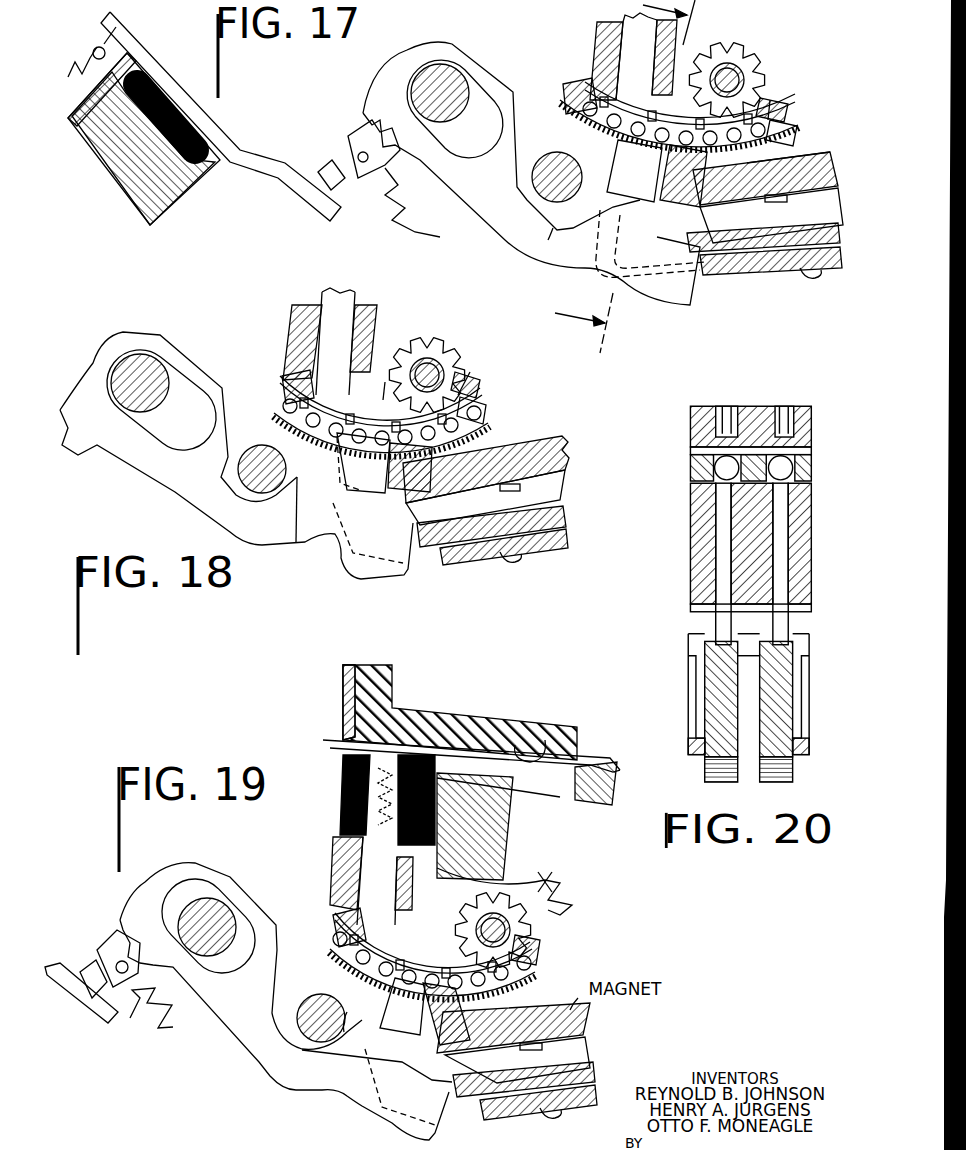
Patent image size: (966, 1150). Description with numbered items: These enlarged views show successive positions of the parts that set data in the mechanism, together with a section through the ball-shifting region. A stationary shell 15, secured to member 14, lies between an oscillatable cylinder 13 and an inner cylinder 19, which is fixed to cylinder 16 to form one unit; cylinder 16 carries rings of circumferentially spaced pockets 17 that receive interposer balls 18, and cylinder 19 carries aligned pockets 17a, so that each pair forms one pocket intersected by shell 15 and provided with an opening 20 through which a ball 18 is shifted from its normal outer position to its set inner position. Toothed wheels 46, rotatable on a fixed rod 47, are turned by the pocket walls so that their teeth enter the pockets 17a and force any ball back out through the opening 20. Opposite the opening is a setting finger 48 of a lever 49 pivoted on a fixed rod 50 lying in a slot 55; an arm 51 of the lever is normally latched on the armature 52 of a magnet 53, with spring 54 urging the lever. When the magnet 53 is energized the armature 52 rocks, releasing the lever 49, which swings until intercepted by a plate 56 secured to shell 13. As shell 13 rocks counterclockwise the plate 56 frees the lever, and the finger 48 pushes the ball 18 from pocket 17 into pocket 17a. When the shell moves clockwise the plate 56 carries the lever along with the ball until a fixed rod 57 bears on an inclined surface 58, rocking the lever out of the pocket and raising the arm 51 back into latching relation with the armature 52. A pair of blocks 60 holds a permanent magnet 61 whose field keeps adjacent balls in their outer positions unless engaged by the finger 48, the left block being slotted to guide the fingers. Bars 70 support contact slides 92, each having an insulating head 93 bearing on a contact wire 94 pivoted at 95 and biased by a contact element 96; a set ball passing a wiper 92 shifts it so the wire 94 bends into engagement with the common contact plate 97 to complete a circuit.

In FIG. 17, the cylinder 13 is at (573, 112).
In FIG. 18, the cylinder 13 is at (490, 427).
In FIG. 19, the cylinder 13 is at (432, 956).
In FIG. 19, the member 14 is at (565, 903).
In FIG. 17, the shell 15 is at (793, 113).
In FIG. 18, the shell 15 is at (285, 388).
In FIG. 19, the shell 15 is at (338, 928).
In FIG. 17, the cylinder 16 is at (785, 103).
In FIG. 18, the cylinder 16 is at (480, 388).
In FIG. 20, the cylinder 16 is at (686, 421).
In FIG. 17, the pocket 17 is at (792, 145).
In FIG. 18, the pocket 17 is at (332, 437).
In FIG. 20, the pocket 17 is at (702, 444).
In FIG. 19, the pocket 17 is at (540, 975).
In FIG. 17, the pocket 17a is at (770, 104).
In FIG. 18, the pocket 17a is at (383, 382).
In FIG. 20, the pocket 17a is at (728, 410).
In FIG. 19, the pocket 17a is at (538, 955).
In FIG. 17, the interposer ball 18 is at (584, 130).
In FIG. 18, the interposer ball 18 is at (293, 427).
In FIG. 20, the interposer ball 18 is at (707, 461).
In FIG. 19, the interposer ball 18 is at (335, 954).
In FIG. 17, the cylinder 19 is at (795, 124).
In FIG. 18, the cylinder 19 is at (485, 416).
In FIG. 20, the cylinder 19 is at (795, 462).
In FIG. 17, the opening 20 is at (655, 115).
In FIG. 18, the opening 20 is at (475, 374).
In FIG. 19, the opening 20 is at (445, 975).
In FIG. 17, the toothed wheel 46 is at (746, 56).
In FIG. 18, the toothed wheel 46 is at (430, 344).
In FIG. 19, the toothed wheel 46 is at (552, 892).
In FIG. 17, the fixed rod 47 is at (727, 70).
In FIG. 18, the fixed rod 47 is at (441, 367).
In FIG. 19, the fixed rod 47 is at (475, 925).
In FIG. 17, the setting finger 48 is at (650, 164).
In FIG. 18, the setting finger 48 is at (382, 498).
In FIG. 20, the setting finger 48 is at (708, 604).
In FIG. 19, the setting finger 48 is at (425, 1011).
In FIG. 17, the lever 49 is at (531, 173).
In FIG. 18, the lever 49 is at (236, 455).
In FIG. 20, the lever 49 is at (698, 725).
In FIG. 19, the lever 49 is at (255, 1058).
In FIG. 17, the fixed rod 50 is at (448, 68).
In FIG. 18, the fixed rod 50 is at (133, 358).
In FIG. 19, the fixed rod 50 is at (232, 905).
In FIG. 17, the arm 51 is at (325, 165).
In FIG. 19, the arm 51 is at (88, 968).
In FIG. 17, the armature 52 is at (323, 208).
In FIG. 19, the armature 52 is at (100, 1032).
In FIG. 17, the magnet 53 is at (144, 126).
In FIG. 17, the spring 54 is at (388, 200).
In FIG. 19, the spring 54 is at (145, 1019).
In FIG. 17, the slot 55 is at (482, 100).
In FIG. 18, the slot 55 is at (194, 388).
In FIG. 19, the slot 55 is at (197, 882).
In FIG. 17, the plate 56 is at (718, 266).
In FIG. 18, the plate 56 is at (420, 530).
In FIG. 20, the plate 56 is at (686, 629).
In FIG. 19, the plate 56 is at (470, 1084).
In FIG. 17, the fixed rod 57 is at (552, 155).
In FIG. 18, the fixed rod 57 is at (252, 448).
In FIG. 19, the fixed rod 57 is at (318, 994).
In FIG. 17, the inclined surface 58 is at (546, 241).
In FIG. 18, the inclined surface 58 is at (289, 522).
In FIG. 19, the inclined surface 58 is at (354, 1005).
In FIG. 17, the block 60 is at (657, 200).
In FIG. 20, the block 60 is at (795, 555).
In FIG. 19, the block 60 is at (427, 1046).
In FIG. 17, the permanent magnet 61 is at (818, 186).
In FIG. 18, the permanent magnet 61 is at (486, 480).
In FIG. 20, the permanent magnet 61 is at (685, 586).
In FIG. 19, the permanent magnet 61 is at (592, 1026).
In FIG. 19, the bar 70 is at (513, 830).
In FIG. 17, the contact slide 92 is at (633, 32).
In FIG. 18, the contact slide 92 is at (330, 341).
In FIG. 19, the contact slide 92 is at (360, 858).
In FIG. 19, the insulating head 93 is at (343, 789).
In FIG. 19, the contact wire 94 is at (323, 741).
In FIG. 19, the pivot 95 is at (610, 764).
In FIG. 19, the contact element 96 is at (545, 742).
In FIG. 19, the common contact plate 97 is at (343, 704).